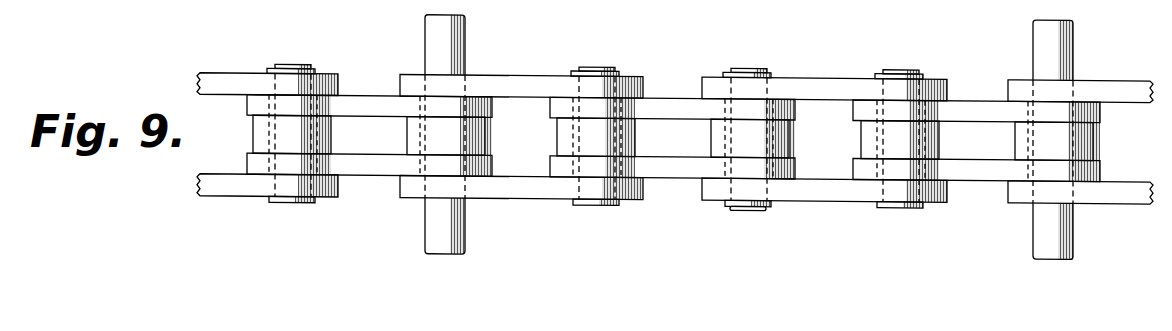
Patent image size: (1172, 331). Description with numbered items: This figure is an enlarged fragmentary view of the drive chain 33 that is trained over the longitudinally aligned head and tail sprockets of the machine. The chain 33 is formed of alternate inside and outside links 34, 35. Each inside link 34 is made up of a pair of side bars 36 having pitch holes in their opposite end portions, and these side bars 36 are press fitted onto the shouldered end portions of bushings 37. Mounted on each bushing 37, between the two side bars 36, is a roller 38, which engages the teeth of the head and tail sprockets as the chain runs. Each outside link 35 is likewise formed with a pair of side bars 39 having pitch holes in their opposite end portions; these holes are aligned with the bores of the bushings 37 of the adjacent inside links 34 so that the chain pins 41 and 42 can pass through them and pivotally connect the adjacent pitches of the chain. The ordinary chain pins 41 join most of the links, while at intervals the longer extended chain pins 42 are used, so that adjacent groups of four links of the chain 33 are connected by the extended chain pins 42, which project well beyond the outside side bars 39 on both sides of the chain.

The drive chain 33 is at (831, 76).
The inside link 34 is at (668, 94).
The outside link 35 is at (508, 72).
The side bar 36 is at (687, 97).
The bushing 37 is at (437, 133).
The roller 38 is at (483, 135).
The side bar 39 is at (545, 75).
The chain pin 41 is at (749, 73).
The extended chain pin 42 is at (425, 40).